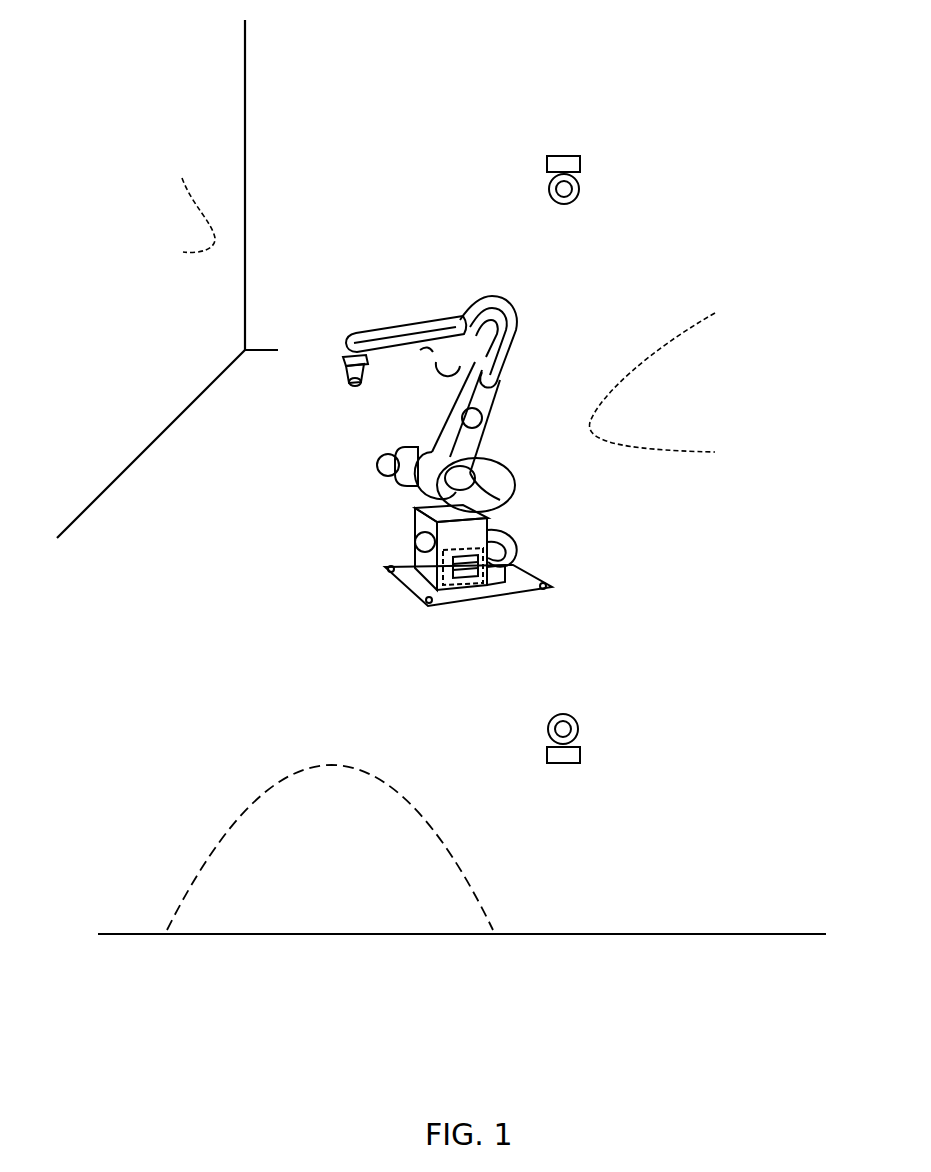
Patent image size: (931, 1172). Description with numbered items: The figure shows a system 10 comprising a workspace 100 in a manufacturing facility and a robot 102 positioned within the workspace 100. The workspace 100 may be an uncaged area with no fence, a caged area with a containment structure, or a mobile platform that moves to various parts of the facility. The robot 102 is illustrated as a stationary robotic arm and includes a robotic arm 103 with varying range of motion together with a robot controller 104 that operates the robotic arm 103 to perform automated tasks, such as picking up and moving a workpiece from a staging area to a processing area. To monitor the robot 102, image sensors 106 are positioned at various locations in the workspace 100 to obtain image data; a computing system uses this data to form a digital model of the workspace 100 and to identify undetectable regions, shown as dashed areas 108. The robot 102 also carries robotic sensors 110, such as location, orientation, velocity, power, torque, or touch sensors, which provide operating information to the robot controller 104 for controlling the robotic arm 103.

The system 10 is at (790, 55).
The workspace 100 is at (626, 122).
The robot 102 is at (470, 465).
The robotic arm 103 is at (415, 327).
The robot controller 104 is at (455, 585).
The image sensor 106 is at (548, 188).
The dashed area 108 is at (182, 229).
The robotic sensor 110 is at (478, 419).